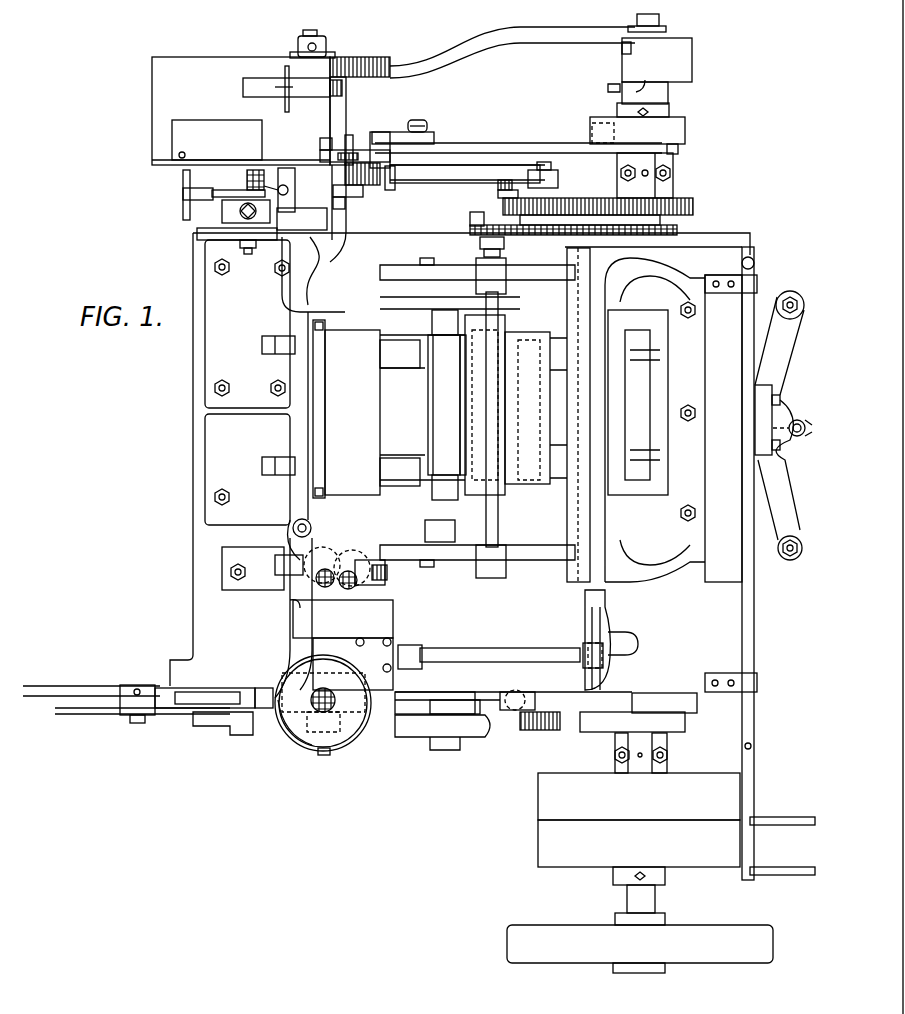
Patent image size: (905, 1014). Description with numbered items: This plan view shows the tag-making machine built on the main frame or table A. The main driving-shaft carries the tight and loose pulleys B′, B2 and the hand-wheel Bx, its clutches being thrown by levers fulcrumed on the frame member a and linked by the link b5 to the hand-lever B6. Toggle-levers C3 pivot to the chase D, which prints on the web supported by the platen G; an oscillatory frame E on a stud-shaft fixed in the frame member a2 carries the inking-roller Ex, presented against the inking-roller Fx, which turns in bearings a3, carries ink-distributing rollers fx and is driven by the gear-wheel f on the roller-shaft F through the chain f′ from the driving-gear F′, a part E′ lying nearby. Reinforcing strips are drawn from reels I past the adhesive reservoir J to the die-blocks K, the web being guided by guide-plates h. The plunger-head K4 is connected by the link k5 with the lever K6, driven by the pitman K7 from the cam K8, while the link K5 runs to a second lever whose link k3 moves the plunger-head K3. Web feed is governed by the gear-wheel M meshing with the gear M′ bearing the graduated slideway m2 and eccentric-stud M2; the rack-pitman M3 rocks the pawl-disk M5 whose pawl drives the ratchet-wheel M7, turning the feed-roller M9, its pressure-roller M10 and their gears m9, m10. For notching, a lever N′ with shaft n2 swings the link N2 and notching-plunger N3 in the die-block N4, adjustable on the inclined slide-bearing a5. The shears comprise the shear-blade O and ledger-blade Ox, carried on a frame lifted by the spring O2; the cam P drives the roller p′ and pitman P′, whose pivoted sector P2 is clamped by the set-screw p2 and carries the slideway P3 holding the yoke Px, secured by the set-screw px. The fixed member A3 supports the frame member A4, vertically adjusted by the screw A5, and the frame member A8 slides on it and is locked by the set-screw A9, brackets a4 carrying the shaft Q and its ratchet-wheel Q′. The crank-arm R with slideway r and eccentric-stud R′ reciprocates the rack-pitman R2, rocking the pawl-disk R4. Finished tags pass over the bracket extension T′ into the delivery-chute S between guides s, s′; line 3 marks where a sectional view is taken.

The delivery-chute S is at (241, 111).
The guide s′ is at (217, 140).
The guide s is at (286, 89).
The shaft Q is at (318, 33).
The ratchet-wheel Q′ is at (346, 108).
The pawl-disk R4 is at (360, 84).
The rack-pitman R2 is at (535, 42).
The eccentric-stud R′ is at (659, 20).
The crank-arm R is at (650, 71).
The slideway r is at (621, 48).
The cam P is at (637, 128).
The roller p′ is at (592, 128).
The pitman P′ is at (513, 150).
The pivoted sector P2 is at (428, 130).
The set-screw p2 is at (417, 118).
The yoke Px is at (380, 135).
The set-screw px is at (425, 166).
The rack-pitman M3 is at (440, 183).
The slideway P3 is at (395, 185).
The ledger-blade Ox is at (345, 142).
The shear-blade O is at (310, 170).
The bracket extension T′ is at (315, 142).
The spring O2 is at (247, 178).
The set-screw A9 is at (183, 193).
The frame member A8 is at (280, 178).
The screw A5 is at (240, 208).
The frame member A4 is at (200, 230).
The brackets a4 is at (302, 219).
The vertical fixed frame member A3 is at (236, 250).
The pawl-disk M5 is at (355, 195).
The ratchet-wheel M7 is at (340, 209).
The eccentric-stud M2 is at (553, 165).
The slideway m2 is at (537, 166).
The gear-wheel M′ is at (498, 194).
The gear-wheel M is at (693, 206).
The gear-wheel f is at (484, 216).
The chain f′ is at (537, 240).
The roller-shaft F is at (480, 243).
The driving-gear F′ is at (670, 265).
The bearings a3 is at (491, 418).
The oscillatory frame E is at (432, 300).
The roller E′ is at (418, 530).
The inking-roller Ex is at (444, 405).
The inking-roller Fx is at (462, 430).
The ink-distributing rollers fx is at (507, 405).
The toggle-levers C3 is at (410, 346).
The chase D is at (352, 412).
The platen G is at (318, 430).
The frame member a2 is at (582, 415).
The main frame A is at (489, 563).
The link b5 is at (779, 343).
The hand-lever B6 is at (805, 440).
The frame member a is at (780, 480).
The section line 3 is at (193, 410).
The web-feeding roller M9 is at (320, 548).
The pressure-roller M10 is at (355, 550).
The gear m9 is at (320, 588).
The gear m10 is at (345, 590).
The inclined slide-bearing a5 is at (343, 645).
The die-block N4 is at (345, 640).
The notching-plunger N3 is at (410, 645).
The link N2 is at (495, 648).
The lever N′ is at (610, 615).
The shaft n2 is at (583, 650).
The die-blocks K is at (323, 703).
The reservoir J is at (335, 742).
The guide-plates h is at (325, 755).
The reels I is at (133, 670).
The plunger-head K3 is at (210, 688).
The link k3 is at (262, 688).
The link K5 is at (225, 735).
The plunger-head K4 is at (420, 710).
The link k5 is at (455, 700).
The lever K6 is at (470, 712).
The pitman K7 is at (565, 732).
The cam K8 is at (664, 703).
The tight pulley B′ is at (538, 796).
The loose pulley B2 is at (538, 845).
The hand-wheel Bx is at (640, 920).